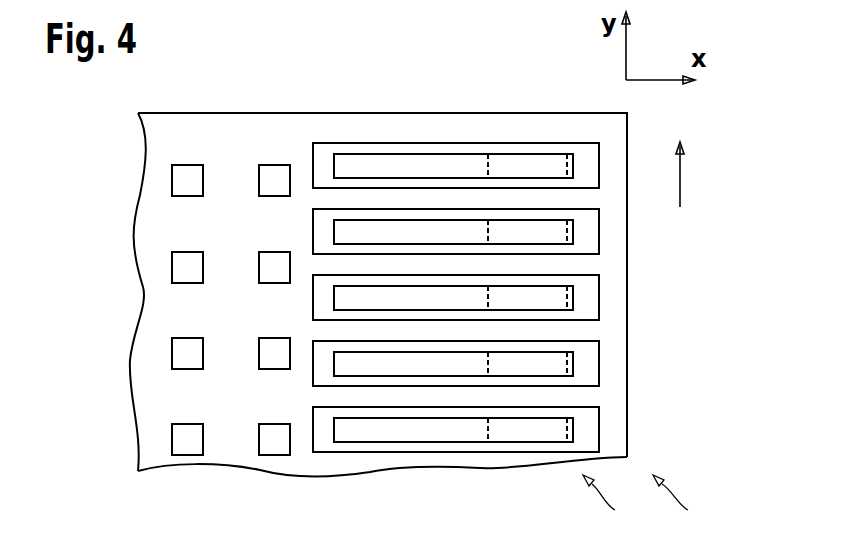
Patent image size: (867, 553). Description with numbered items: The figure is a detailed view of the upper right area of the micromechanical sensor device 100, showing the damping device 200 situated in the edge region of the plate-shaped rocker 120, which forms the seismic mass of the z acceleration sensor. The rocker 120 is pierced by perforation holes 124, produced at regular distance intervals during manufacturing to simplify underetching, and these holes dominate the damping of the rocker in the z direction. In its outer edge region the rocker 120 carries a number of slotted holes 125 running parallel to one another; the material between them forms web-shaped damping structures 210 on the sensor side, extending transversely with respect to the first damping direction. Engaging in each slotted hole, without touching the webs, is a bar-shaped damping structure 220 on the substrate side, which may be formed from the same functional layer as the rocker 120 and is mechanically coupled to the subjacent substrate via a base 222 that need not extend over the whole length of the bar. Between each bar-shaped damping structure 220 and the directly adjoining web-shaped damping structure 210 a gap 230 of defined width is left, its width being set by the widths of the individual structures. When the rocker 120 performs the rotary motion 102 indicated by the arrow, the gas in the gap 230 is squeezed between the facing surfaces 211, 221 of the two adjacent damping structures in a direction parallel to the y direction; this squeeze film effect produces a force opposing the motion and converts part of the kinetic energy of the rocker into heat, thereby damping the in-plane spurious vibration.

The sensor device 100 is at (689, 506).
The rotary motion 102 is at (680, 175).
The rocker 120 is at (627, 270).
The perforation holes 124 is at (187, 443).
The slotted holes 125 is at (587, 432).
The damping device 200 is at (619, 506).
The damping structures 210 is at (353, 397).
The surface 211 is at (415, 422).
The damping structures 220 is at (466, 430).
The surface 221 is at (470, 397).
The base 222 is at (552, 430).
The gap 230 is at (547, 410).